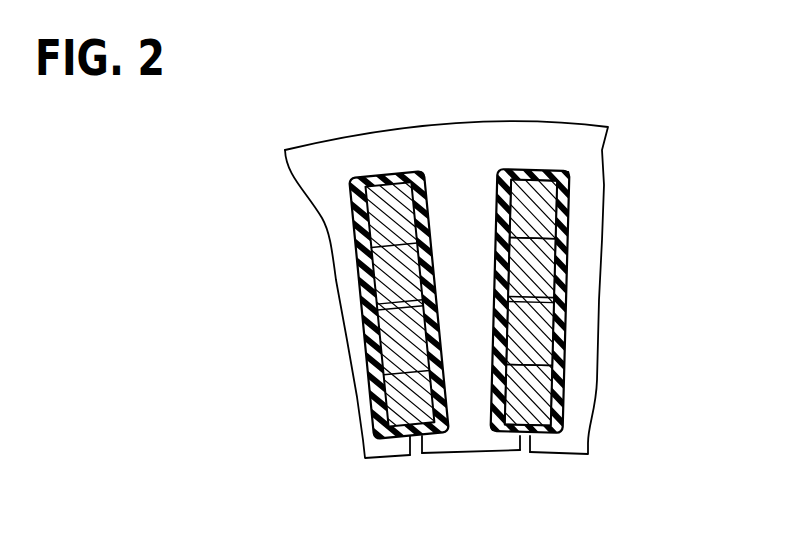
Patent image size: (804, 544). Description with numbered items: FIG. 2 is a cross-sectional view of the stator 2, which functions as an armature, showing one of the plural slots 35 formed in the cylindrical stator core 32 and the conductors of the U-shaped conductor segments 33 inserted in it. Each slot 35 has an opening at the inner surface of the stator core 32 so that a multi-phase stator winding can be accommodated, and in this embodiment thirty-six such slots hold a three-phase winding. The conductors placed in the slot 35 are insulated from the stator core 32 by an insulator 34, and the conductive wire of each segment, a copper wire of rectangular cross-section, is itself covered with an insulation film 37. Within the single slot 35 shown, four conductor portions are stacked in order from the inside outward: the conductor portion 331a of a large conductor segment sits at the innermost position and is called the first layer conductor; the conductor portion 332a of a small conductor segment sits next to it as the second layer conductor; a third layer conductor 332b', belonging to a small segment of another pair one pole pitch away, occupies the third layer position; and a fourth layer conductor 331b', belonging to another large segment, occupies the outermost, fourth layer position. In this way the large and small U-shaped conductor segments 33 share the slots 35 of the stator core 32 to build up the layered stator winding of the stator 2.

The stator 2 is at (543, 100).
The stator core 32 is at (457, 138).
The U-shaped conductor segments 33 is at (698, 172).
The conductor portion (first layer conductor) 331a is at (535, 388).
The fourth layer conductor 331b' is at (605, 208).
The conductor portion (second layer conductor) 332a is at (540, 330).
The third layer conductor 332b' is at (604, 267).
The insulator 34 is at (571, 178).
The slot 35 is at (527, 433).
The insulation film 37 is at (371, 397).